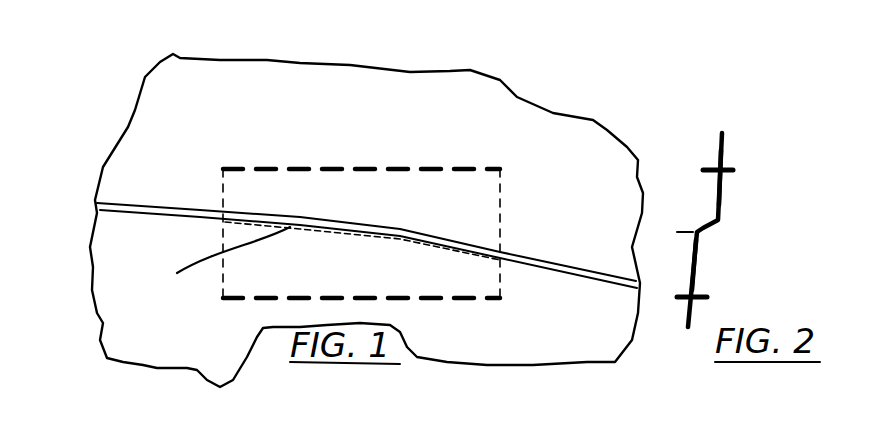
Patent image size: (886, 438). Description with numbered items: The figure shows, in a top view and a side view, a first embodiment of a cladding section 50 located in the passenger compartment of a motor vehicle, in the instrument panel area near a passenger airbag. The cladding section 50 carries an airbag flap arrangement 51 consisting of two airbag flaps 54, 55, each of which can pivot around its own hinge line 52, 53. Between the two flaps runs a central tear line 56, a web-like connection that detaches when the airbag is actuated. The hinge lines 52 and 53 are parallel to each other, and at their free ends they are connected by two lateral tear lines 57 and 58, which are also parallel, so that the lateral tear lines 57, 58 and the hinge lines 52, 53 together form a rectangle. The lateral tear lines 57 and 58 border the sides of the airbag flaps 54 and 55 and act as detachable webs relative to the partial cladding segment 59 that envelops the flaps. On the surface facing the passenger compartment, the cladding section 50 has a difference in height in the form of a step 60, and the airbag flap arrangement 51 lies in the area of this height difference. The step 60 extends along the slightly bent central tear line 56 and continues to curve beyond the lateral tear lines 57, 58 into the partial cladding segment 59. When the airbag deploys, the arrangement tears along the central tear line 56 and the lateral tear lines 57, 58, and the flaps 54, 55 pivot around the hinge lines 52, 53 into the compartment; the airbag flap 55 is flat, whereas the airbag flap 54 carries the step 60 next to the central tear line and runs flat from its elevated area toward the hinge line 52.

In FIG. 1, the cladding section 50 is at (575, 98).
In FIG. 1, the airbag flap arrangement 51 is at (519, 176).
In FIG. 1, the hinge line 52 is at (337, 168).
In FIG. 2, the hinge line 52 is at (730, 159).
In FIG. 1, the hinge line 53 is at (433, 298).
In FIG. 2, the hinge line 53 is at (697, 297).
In FIG. 1, the airbag flap 54 is at (483, 218).
In FIG. 2, the airbag flap 54 is at (717, 200).
In FIG. 1, the airbag flap 55 is at (485, 280).
In FIG. 2, the airbag flap 55 is at (693, 265).
In FIG. 1, the central tear line 56 is at (210, 270).
In FIG. 2, the central tear line 56 is at (703, 230).
In FIG. 1, the lateral tear line 57 is at (220, 243).
In FIG. 1, the lateral tear line 58 is at (502, 233).
In FIG. 1, the partial cladding segment 59 is at (173, 127).
In FIG. 2, the partial cladding segment 59 is at (723, 143).
In FIG. 1, the step 60 is at (670, 183).
In FIG. 2, the step 60 is at (692, 211).